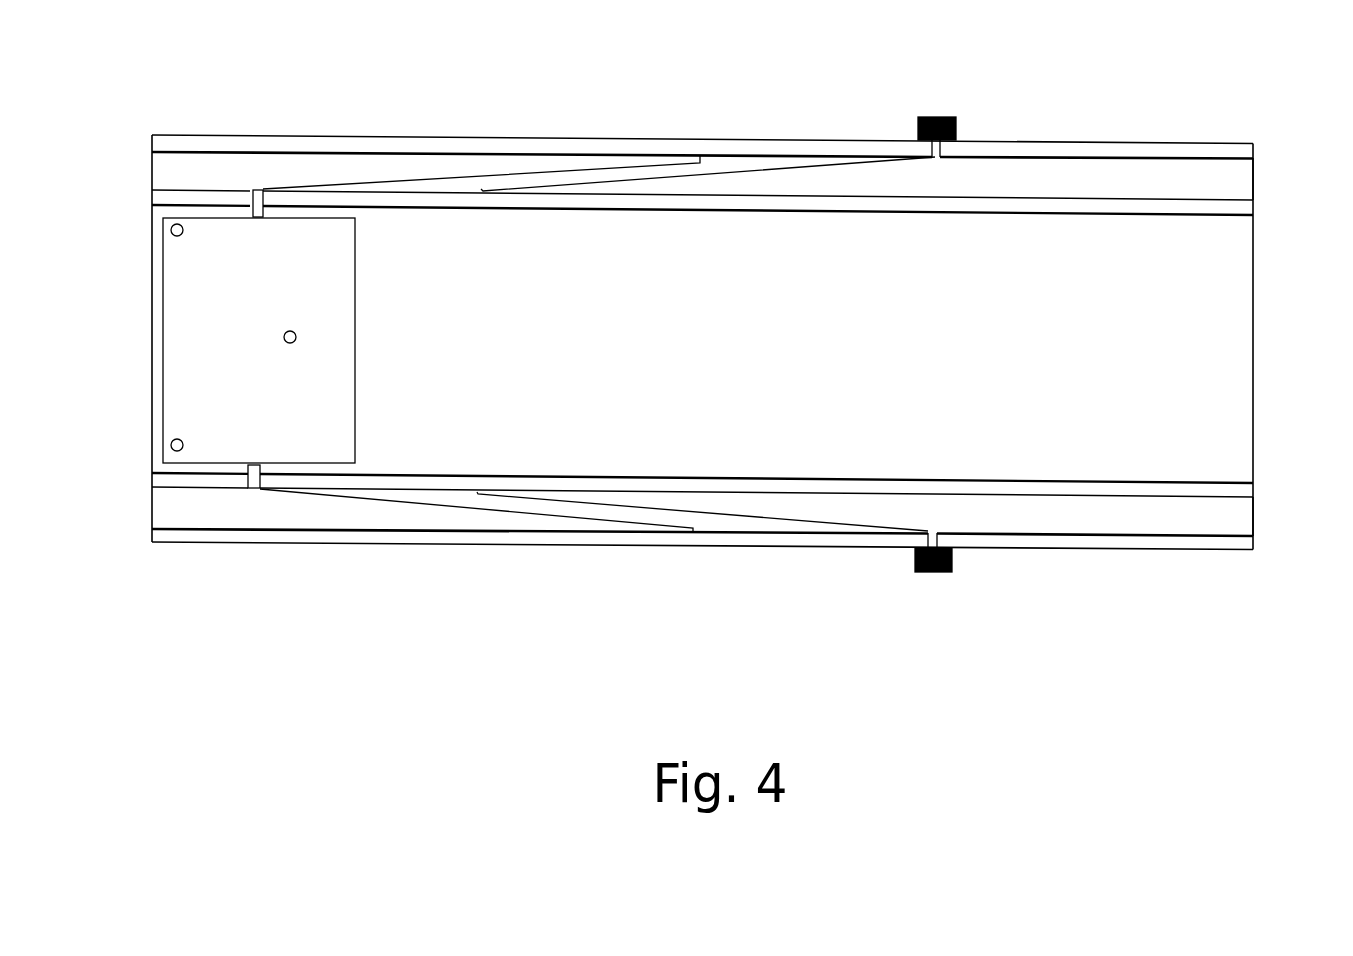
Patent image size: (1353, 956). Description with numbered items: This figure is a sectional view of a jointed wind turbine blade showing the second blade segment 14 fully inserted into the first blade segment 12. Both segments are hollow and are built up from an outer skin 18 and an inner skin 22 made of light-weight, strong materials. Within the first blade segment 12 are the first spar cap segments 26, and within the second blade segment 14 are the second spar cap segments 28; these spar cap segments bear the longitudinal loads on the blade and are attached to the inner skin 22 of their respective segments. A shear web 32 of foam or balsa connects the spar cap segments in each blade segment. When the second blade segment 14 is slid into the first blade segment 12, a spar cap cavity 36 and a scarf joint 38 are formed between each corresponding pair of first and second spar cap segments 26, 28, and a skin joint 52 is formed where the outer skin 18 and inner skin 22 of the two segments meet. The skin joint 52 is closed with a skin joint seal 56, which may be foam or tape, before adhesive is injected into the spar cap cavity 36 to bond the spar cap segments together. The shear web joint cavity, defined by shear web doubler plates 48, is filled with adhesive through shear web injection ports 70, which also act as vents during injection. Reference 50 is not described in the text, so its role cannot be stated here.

The first blade segment 12 is at (390, 138).
The second blade segment 14 is at (1058, 140).
The outer skin 18 is at (1180, 147).
The inner skin 22 is at (1253, 208).
The first spar cap segment 26 is at (150, 175).
The second spar cap segment 28 is at (1257, 170).
The shear web 32 is at (1258, 338).
The spar cap cavity 36 is at (706, 175).
The scarf joint 38 is at (532, 172).
The shear web doubler plate 48 is at (170, 398).
The connector 50 is at (153, 337).
The skin joint 52 is at (930, 147).
The skin joint seal 56 is at (940, 117).
The shear web injection port 70 is at (168, 228).